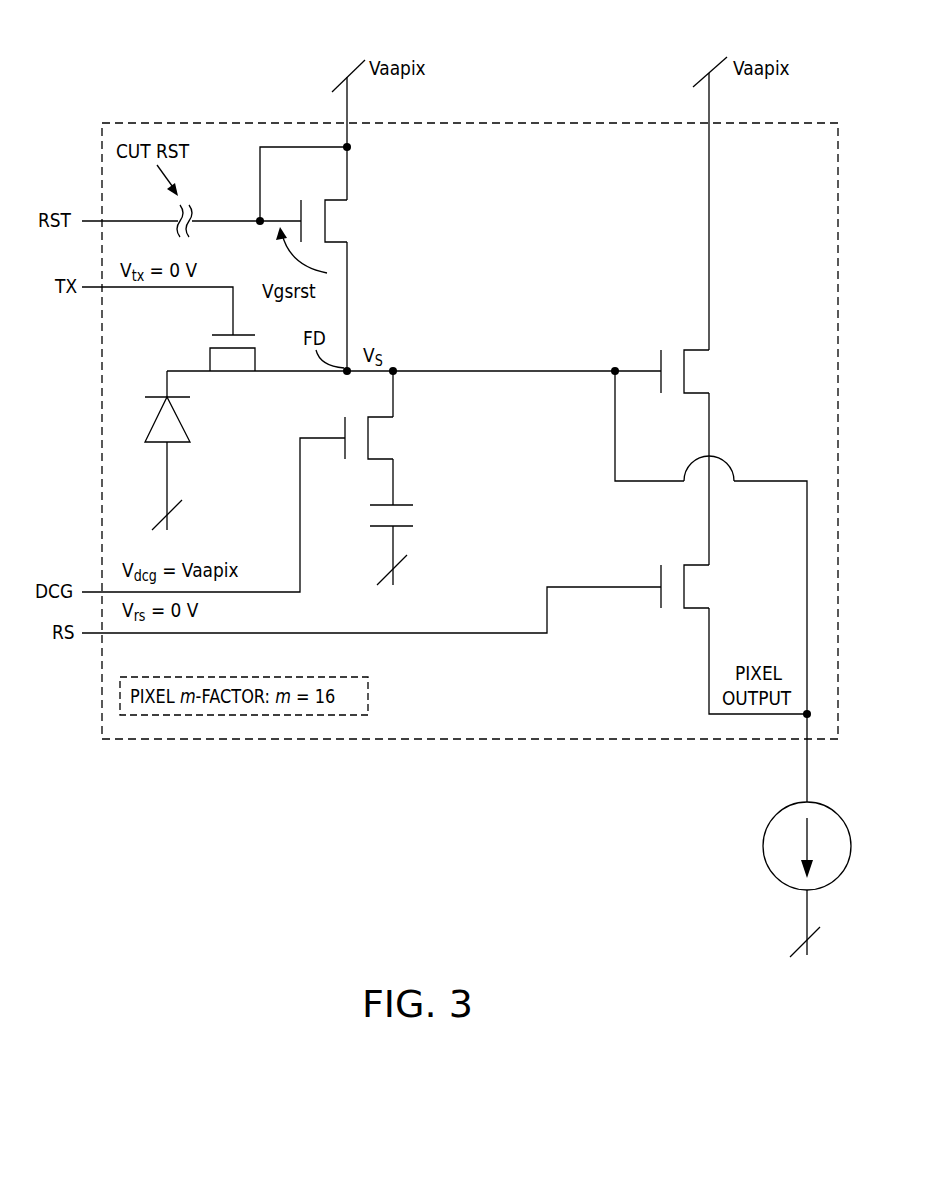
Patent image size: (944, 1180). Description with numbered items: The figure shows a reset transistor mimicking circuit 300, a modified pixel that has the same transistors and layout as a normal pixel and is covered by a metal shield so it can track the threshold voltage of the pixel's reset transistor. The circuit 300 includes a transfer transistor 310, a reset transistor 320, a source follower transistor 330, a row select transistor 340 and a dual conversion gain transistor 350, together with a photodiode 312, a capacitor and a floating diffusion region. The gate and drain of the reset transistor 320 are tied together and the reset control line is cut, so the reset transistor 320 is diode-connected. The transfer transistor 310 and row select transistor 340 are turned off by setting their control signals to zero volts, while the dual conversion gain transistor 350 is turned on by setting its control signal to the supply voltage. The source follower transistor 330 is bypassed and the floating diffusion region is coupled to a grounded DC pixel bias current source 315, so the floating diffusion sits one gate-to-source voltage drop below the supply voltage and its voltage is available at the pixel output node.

The reset transistor mimicking circuit 300 is at (168, 96).
The transfer transistor 310 is at (210, 352).
The photodiode 312 is at (180, 420).
The reset transistor 320 is at (347, 241).
The source follower transistor 330 is at (695, 392).
The row select transistor 340 is at (700, 604).
The dual conversion gain transistor 350 is at (383, 458).
The DC pixel bias current source 315 is at (782, 882).